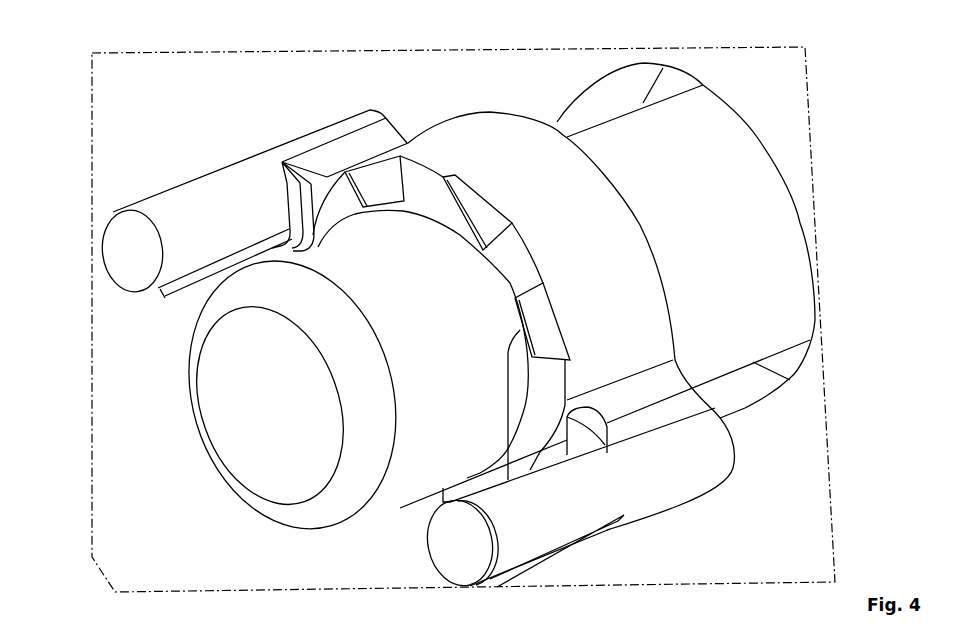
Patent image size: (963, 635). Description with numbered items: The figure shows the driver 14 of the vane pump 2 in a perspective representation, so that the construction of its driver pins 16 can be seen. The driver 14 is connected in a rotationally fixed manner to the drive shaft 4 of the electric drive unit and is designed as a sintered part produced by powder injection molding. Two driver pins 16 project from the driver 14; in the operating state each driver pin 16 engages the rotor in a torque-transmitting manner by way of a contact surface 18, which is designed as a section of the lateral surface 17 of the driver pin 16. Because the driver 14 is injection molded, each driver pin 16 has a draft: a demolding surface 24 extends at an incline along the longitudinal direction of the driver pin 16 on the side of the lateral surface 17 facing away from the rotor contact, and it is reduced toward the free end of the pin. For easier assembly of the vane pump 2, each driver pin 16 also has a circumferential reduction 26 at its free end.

The vane pump 2 is at (66, 89).
The drive shaft 4 is at (237, 405).
The driver 14 is at (568, 177).
The driver pin 16 is at (123, 252).
The lateral surface 17 is at (192, 159).
The contact surface 18 is at (518, 342).
The demolding surface 24 is at (168, 223).
The circumferential reduction 26 is at (133, 292).